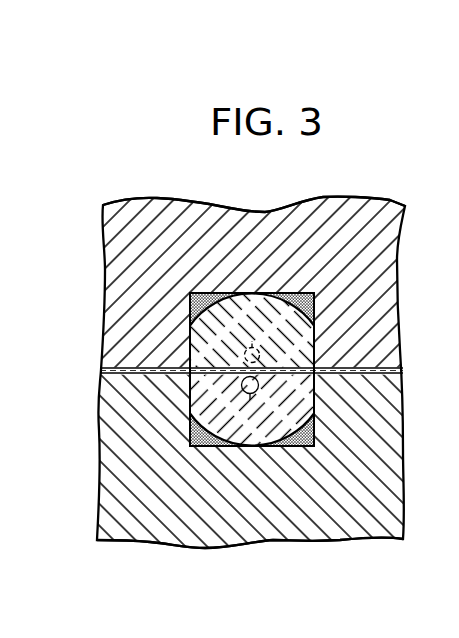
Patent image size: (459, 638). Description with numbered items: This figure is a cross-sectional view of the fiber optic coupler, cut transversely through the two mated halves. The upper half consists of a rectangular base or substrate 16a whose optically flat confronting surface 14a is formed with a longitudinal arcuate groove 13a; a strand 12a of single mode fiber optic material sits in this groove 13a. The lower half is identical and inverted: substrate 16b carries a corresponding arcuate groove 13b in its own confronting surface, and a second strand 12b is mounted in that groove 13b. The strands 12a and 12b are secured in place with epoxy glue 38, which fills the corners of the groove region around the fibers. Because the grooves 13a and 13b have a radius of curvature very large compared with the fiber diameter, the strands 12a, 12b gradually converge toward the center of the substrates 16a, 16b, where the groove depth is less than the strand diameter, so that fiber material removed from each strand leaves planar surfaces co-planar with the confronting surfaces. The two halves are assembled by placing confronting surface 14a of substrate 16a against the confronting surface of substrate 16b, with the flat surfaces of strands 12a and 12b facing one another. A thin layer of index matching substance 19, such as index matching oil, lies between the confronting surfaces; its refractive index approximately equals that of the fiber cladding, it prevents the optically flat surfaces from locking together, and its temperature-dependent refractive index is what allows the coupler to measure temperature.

The strand of single mode fiber optic material 12a is at (212, 344).
The strand of single mode fiber optic material 12b is at (214, 404).
The longitudinal arcuate groove 13a is at (197, 293).
The longitudinal arcuate groove 13b is at (196, 447).
The optically flat confronting surface 14a is at (130, 374).
The rectangular base or substrate 16a is at (290, 209).
The rectangular base or substrate 16b is at (342, 542).
The index matching substance 19 is at (402, 359).
The epoxy glue 38 is at (307, 297).